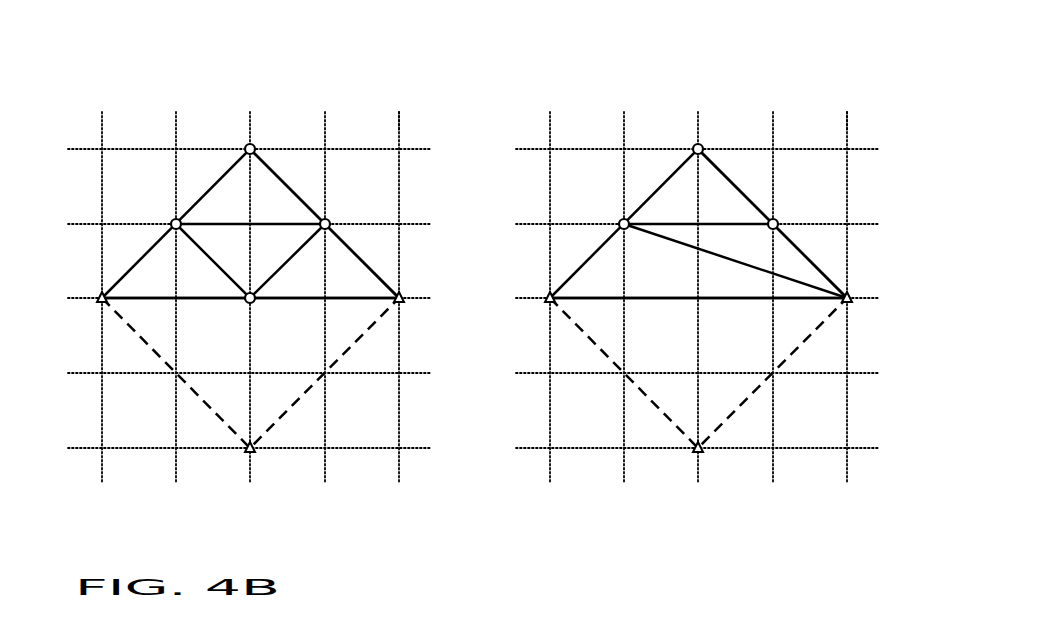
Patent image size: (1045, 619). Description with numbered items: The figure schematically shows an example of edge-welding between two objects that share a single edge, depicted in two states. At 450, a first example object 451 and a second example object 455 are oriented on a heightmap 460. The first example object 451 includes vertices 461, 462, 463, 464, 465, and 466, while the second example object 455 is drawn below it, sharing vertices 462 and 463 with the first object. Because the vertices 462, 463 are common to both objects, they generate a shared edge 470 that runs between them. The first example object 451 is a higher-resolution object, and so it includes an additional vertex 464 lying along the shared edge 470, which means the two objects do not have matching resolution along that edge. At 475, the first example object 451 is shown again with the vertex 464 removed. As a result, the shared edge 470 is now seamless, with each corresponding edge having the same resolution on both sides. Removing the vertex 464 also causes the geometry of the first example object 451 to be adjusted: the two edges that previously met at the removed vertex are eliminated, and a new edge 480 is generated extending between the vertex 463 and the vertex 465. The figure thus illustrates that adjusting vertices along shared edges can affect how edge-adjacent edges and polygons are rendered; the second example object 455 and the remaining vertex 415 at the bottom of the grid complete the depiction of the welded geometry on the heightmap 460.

The first state of edge-welding example 450 is at (138, 82).
The second state of edge-welding example 475 is at (633, 82).
The heightmap 460 is at (364, 104).
The vertex 461 is at (252, 143).
The vertex 465 is at (173, 223).
The vertex 466 is at (328, 220).
The vertex 464 is at (250, 293).
The vertex 462 is at (100, 293).
The vertex 463 is at (401, 292).
The first example object 451 is at (352, 249).
The shared edge 470 is at (165, 300).
The new edge 480 is at (690, 250).
The second example object 455 is at (325, 372).
The bottom vertex 415 is at (254, 450).